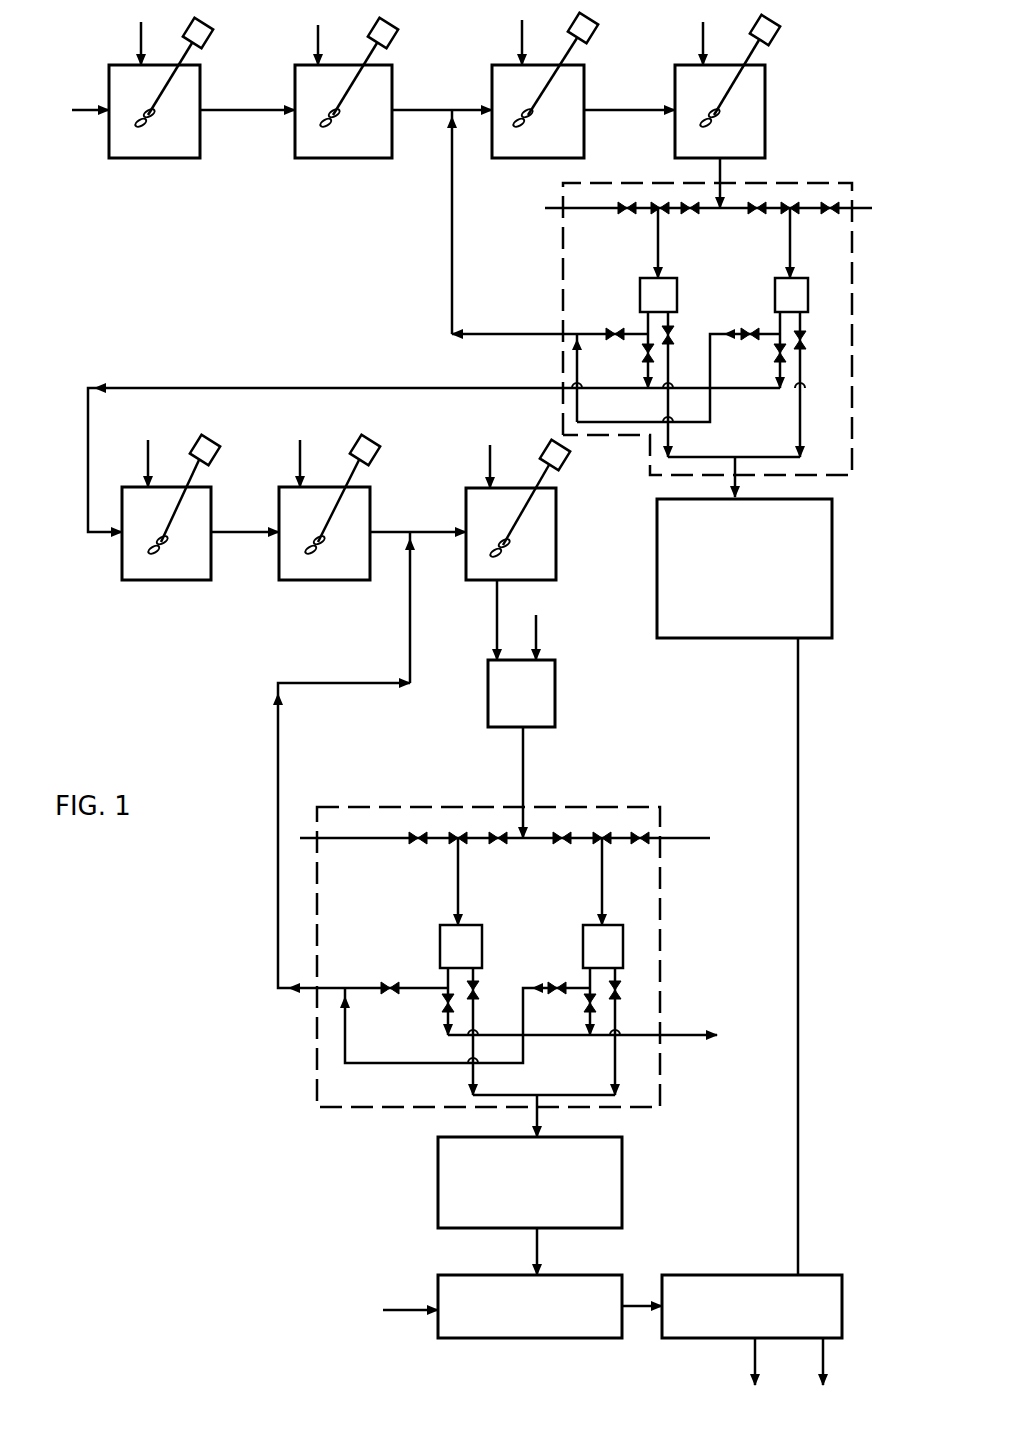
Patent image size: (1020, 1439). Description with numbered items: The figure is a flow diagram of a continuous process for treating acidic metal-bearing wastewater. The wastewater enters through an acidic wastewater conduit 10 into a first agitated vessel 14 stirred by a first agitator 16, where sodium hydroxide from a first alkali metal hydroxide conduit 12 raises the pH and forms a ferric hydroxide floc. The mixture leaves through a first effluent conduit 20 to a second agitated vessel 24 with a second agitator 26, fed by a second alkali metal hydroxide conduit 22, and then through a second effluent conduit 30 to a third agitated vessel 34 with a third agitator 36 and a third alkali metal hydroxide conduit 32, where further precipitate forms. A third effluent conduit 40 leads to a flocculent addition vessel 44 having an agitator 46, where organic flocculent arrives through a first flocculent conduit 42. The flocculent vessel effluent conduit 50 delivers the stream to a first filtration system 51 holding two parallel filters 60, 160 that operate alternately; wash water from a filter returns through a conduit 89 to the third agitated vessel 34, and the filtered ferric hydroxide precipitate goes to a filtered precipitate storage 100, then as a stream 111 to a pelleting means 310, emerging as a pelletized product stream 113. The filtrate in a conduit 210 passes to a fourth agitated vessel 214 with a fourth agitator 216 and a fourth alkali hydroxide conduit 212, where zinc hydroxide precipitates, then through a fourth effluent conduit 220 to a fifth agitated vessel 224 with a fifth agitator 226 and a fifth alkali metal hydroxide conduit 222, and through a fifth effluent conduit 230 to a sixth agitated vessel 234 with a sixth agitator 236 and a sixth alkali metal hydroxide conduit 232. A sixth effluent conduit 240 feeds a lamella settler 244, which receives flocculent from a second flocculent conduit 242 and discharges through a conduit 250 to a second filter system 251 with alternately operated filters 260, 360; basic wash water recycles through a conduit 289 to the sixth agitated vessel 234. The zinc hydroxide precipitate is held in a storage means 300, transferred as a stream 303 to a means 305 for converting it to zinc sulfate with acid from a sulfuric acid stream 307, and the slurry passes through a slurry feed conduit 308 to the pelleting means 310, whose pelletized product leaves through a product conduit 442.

The acidic wastewater conduit 10 is at (92, 108).
The first alkali metal hydroxide conduit 12 is at (141, 48).
The first agitated vessel 14 is at (112, 140).
The first agitator 16 is at (203, 45).
The first effluent conduit 20 is at (222, 110).
The second alkali metal hydroxide conduit 22 is at (318, 40).
The second agitated vessel 24 is at (297, 140).
The second agitator 26 is at (394, 42).
The second effluent conduit 30 is at (435, 100).
The third alkali metal hydroxide conduit 32 is at (522, 32).
The third agitated vessel 34 is at (560, 150).
The third agitator 36 is at (592, 27).
The third effluent conduit 40 is at (635, 97).
The first flocculent conduit 42 is at (703, 40).
The flocculent addition vessel 44 is at (677, 128).
The agitator 46 is at (756, 28).
The flocculent vessel effluent conduit 50 is at (718, 167).
The first filtration system 51 is at (830, 184).
The filter 60 is at (641, 297).
The filter 160 is at (776, 285).
The conduit 89 is at (530, 330).
The conduit 210 is at (345, 392).
The filtered precipitate storage 100 is at (768, 584).
The stream 111 is at (800, 830).
The fourth alkali hydroxide conduit 212 is at (148, 455).
The fourth agitated vessel 214 is at (124, 560).
The fourth agitator 216 is at (206, 442).
The fourth effluent conduit 220 is at (238, 522).
The fifth alkali metal hydroxide conduit 222 is at (300, 458).
The fifth agitated vessel 224 is at (296, 576).
The fifth agitator 226 is at (366, 442).
The fifth effluent conduit 230 is at (388, 532).
The sixth alkali metal hydroxide conduit 232 is at (490, 456).
The sixth agitated vessel 234 is at (487, 572).
The sixth agitator 236 is at (562, 462).
The sixth effluent conduit 240 is at (497, 640).
The second flocculent conduit 242 is at (536, 635).
The lamella settler 244 is at (492, 694).
The conduit 250 is at (524, 770).
The second filter system 251 is at (665, 908).
The filter 260 is at (443, 943).
The filter 360 is at (585, 943).
The conduit 289 is at (300, 998).
The storage means 300 is at (556, 1196).
The stream 303 is at (535, 1243).
The means for converting zinc hydroxide to zinc sulfate 305 is at (556, 1324).
The sulfuric acid stream 307 is at (412, 1284).
The slurry feed conduit 308 is at (635, 1302).
The pelleting means 310 is at (780, 1324).
The product conduit 442 is at (755, 1357).
The stream 113 is at (823, 1357).